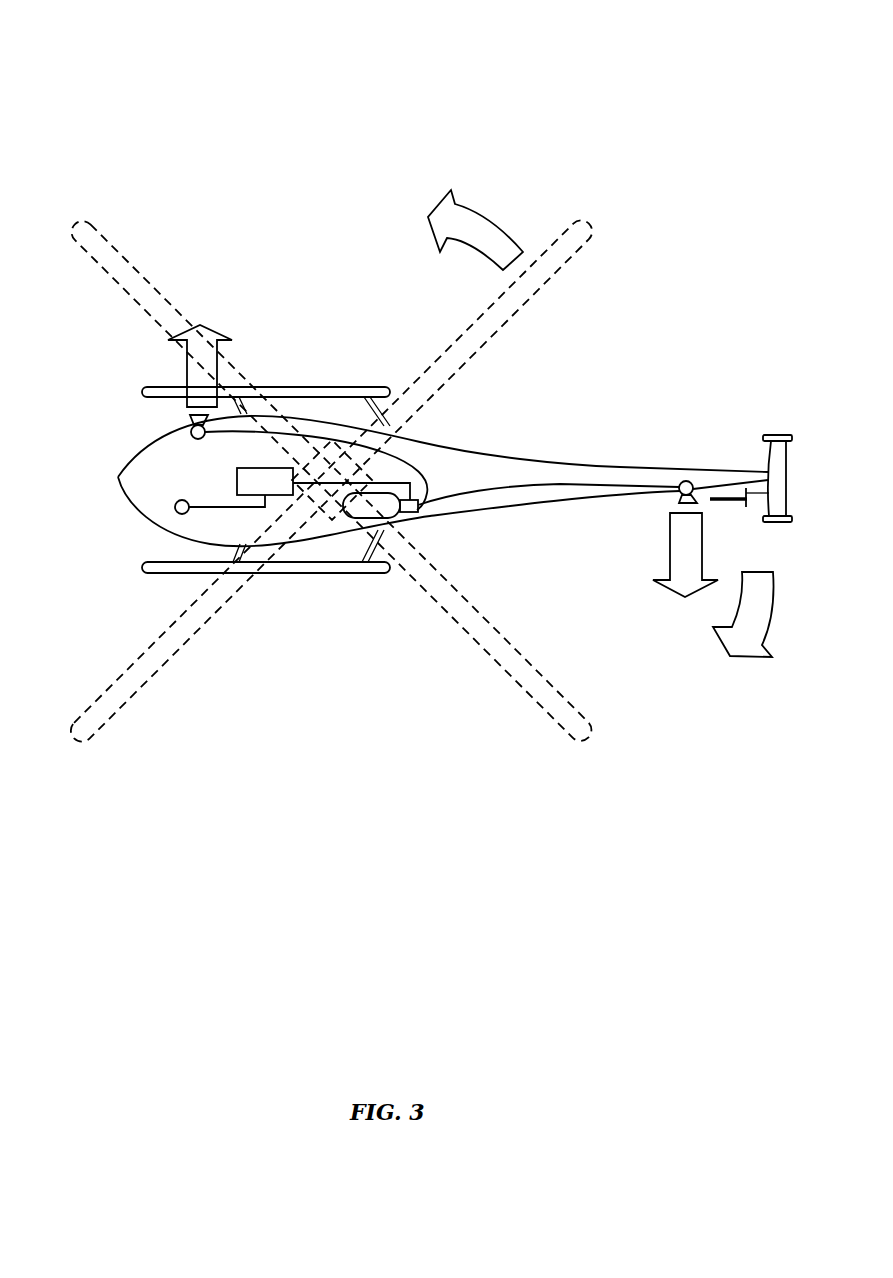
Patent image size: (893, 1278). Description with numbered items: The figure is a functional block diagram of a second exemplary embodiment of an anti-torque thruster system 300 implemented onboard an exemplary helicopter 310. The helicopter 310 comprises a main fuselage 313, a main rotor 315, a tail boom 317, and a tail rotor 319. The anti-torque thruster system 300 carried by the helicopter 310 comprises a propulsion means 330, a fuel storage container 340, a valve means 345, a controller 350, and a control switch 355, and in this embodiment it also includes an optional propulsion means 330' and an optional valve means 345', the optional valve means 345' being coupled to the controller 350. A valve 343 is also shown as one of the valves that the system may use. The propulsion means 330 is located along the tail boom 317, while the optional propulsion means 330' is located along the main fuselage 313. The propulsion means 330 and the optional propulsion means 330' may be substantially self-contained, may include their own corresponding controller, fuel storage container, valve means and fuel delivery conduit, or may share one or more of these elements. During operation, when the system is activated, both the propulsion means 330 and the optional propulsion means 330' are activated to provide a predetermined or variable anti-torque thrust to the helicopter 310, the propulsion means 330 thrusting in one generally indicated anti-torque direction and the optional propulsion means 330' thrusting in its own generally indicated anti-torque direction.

The anti-torque thruster system 300 is at (277, 70).
The helicopter 310 is at (236, 228).
The main fuselage 313 is at (453, 440).
The main rotor 315 is at (461, 335).
The tail boom 317 is at (651, 458).
The tail rotor 319 is at (729, 506).
The propulsion means 330 is at (631, 539).
The optional propulsion means 330' is at (137, 382).
The fuel storage container 340 is at (348, 521).
The valve 343 is at (420, 520).
The valve means 345 is at (548, 461).
The optional valve means 345' is at (316, 427).
The controller 350 is at (236, 482).
The control switch 355 is at (174, 507).